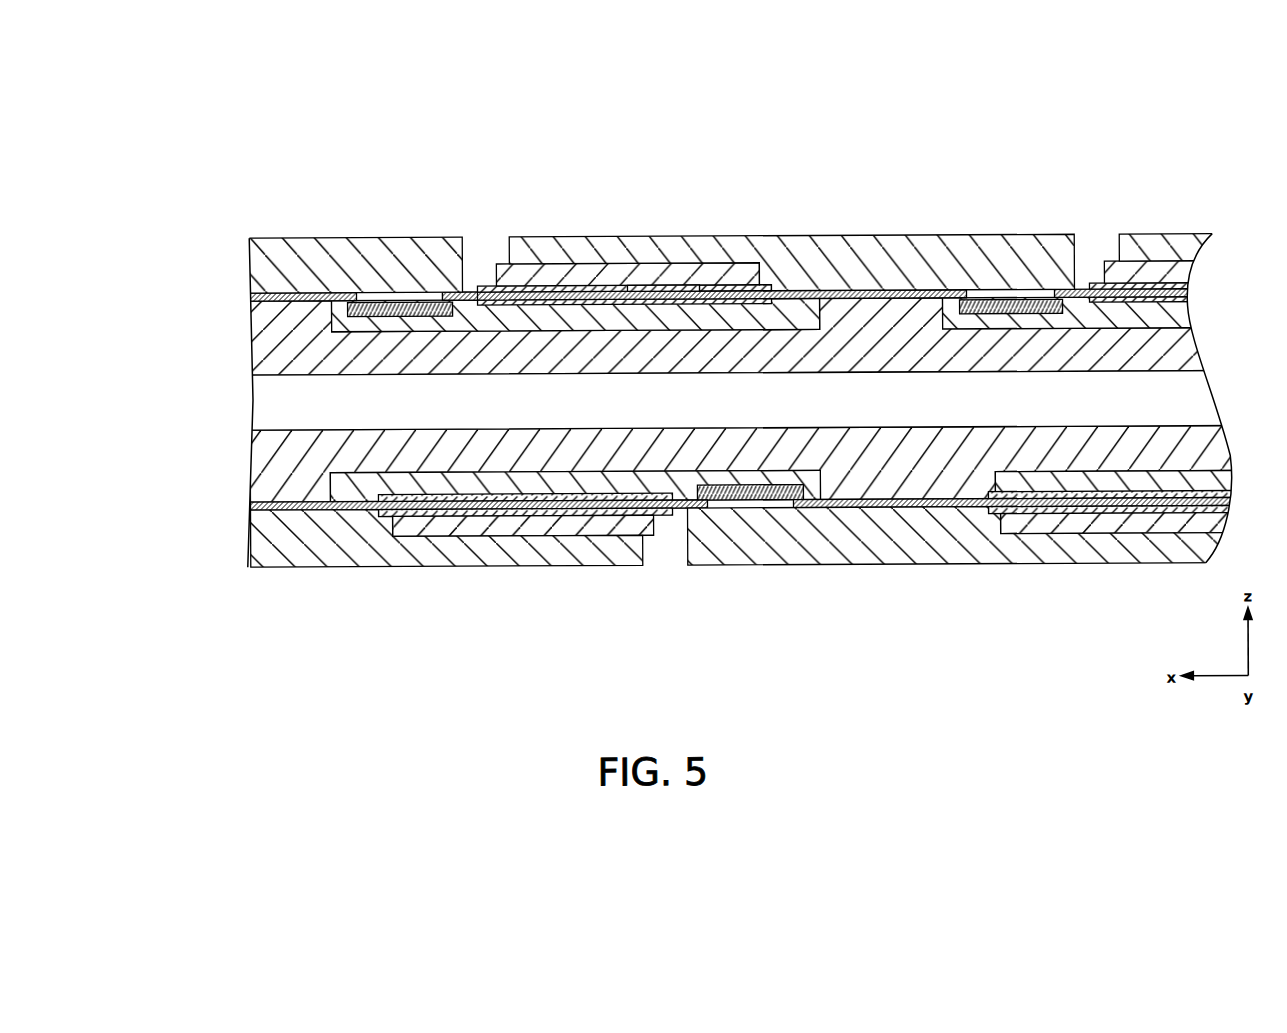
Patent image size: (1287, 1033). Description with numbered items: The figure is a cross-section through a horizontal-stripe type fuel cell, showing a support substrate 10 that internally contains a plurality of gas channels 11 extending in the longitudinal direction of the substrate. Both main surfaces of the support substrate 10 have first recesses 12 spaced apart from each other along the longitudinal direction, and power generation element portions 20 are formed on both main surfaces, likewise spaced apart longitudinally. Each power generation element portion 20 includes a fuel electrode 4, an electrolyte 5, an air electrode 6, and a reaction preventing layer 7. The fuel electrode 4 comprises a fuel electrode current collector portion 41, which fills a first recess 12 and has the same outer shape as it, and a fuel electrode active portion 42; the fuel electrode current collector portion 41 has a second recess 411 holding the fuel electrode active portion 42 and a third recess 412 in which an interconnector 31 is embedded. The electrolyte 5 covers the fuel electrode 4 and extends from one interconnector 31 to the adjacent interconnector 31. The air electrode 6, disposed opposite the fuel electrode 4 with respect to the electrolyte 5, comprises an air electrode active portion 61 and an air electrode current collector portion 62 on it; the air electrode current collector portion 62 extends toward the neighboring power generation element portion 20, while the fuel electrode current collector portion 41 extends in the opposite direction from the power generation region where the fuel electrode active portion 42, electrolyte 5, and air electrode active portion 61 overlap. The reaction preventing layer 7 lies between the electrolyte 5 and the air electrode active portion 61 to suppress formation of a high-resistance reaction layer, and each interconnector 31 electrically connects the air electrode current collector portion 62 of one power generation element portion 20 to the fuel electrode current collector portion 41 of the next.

The fuel electrode 4 is at (487, 135).
The electrolyte 5 is at (252, 296).
The air electrode 6 is at (702, 152).
The reaction preventing layer 7 is at (592, 265).
The support substrate 10 is at (253, 357).
The gas channel 11 is at (355, 413).
The first recess 12 is at (792, 325).
The power generation element portion 20 is at (571, 238).
The interconnector 31 is at (355, 302).
The fuel electrode current collector portion 41 is at (462, 292).
The fuel electrode active portion 42 is at (483, 303).
The air electrode active portion 61 is at (646, 288).
The air electrode current collector portion 62 is at (303, 238).
The second recess 411 is at (746, 290).
The third recess 412 is at (424, 292).